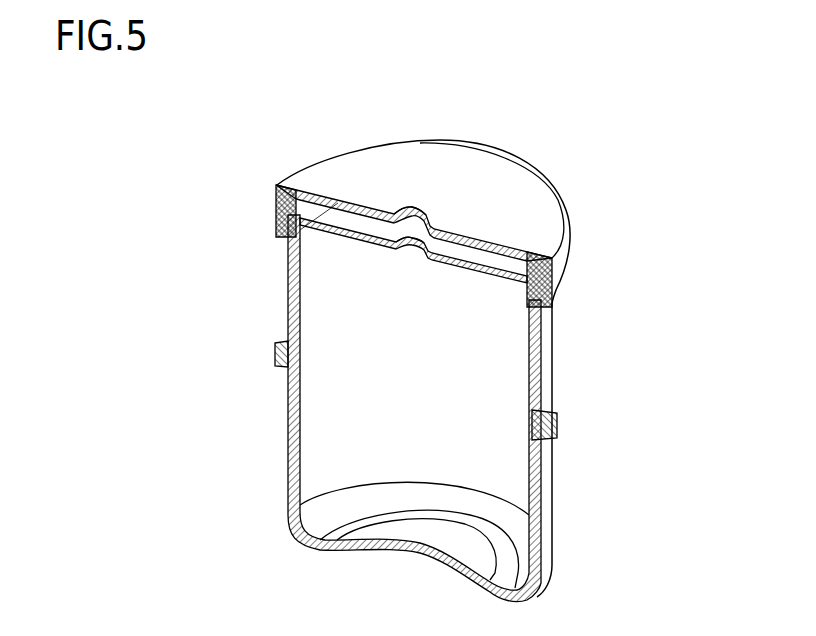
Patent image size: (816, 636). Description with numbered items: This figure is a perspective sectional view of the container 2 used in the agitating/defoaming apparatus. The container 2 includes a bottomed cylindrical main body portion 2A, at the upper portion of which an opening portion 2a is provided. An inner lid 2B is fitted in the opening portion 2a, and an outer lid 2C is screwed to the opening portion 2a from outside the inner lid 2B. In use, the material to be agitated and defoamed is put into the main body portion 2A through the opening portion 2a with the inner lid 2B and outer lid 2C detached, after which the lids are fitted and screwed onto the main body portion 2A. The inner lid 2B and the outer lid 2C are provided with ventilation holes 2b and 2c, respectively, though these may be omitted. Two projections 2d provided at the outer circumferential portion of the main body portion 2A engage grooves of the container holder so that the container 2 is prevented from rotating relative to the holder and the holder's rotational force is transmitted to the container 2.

The container 2 is at (447, 354).
The main body portion 2A is at (550, 365).
The inner lid 2B is at (488, 263).
The outer lid 2C is at (493, 178).
The opening portion 2a is at (316, 247).
The ventilation hole 2b is at (398, 236).
The ventilation hole 2c is at (410, 204).
The projections 2d is at (276, 352).